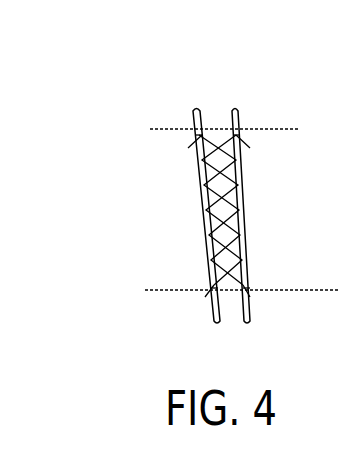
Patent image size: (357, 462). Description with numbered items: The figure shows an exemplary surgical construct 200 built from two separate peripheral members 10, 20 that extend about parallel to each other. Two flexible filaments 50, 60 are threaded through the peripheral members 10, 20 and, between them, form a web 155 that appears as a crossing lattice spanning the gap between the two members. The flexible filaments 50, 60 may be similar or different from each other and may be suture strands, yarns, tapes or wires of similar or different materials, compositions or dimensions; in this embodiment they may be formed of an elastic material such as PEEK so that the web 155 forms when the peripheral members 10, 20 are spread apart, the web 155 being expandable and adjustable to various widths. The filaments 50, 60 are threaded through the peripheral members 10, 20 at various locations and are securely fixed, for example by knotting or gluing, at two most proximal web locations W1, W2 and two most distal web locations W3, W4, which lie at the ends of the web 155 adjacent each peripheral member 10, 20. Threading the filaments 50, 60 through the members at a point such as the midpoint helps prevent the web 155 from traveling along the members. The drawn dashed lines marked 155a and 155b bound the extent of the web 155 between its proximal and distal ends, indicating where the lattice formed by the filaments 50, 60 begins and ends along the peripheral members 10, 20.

The surgical construct 200 is at (134, 138).
The peripheral member 10 is at (208, 214).
The peripheral member 20 is at (240, 219).
The flexible filament 50 is at (215, 135).
The flexible filament 60 is at (228, 135).
The web 155 is at (238, 172).
The first end of crossing region 155a is at (197, 293).
The second end of crossing region 155b is at (240, 128).
The most proximal web location W1 is at (212, 281).
The most proximal web location W2 is at (246, 285).
The most distal web location W3 is at (196, 138).
The most distal web location W4 is at (242, 135).